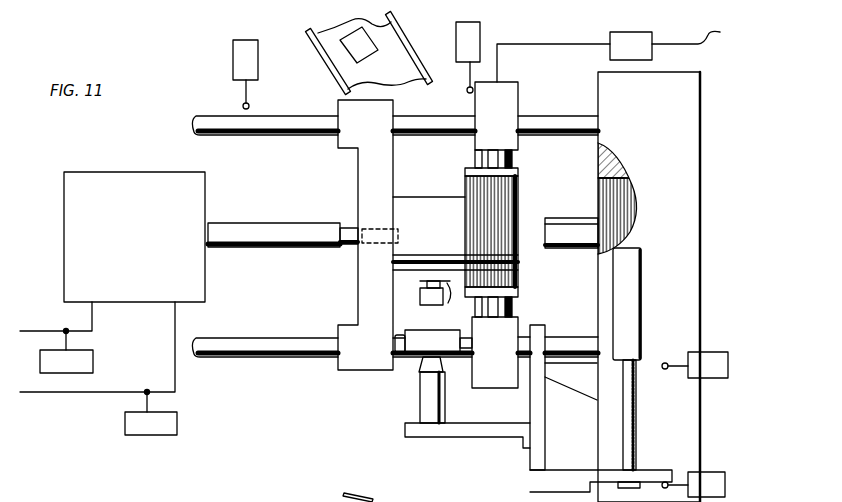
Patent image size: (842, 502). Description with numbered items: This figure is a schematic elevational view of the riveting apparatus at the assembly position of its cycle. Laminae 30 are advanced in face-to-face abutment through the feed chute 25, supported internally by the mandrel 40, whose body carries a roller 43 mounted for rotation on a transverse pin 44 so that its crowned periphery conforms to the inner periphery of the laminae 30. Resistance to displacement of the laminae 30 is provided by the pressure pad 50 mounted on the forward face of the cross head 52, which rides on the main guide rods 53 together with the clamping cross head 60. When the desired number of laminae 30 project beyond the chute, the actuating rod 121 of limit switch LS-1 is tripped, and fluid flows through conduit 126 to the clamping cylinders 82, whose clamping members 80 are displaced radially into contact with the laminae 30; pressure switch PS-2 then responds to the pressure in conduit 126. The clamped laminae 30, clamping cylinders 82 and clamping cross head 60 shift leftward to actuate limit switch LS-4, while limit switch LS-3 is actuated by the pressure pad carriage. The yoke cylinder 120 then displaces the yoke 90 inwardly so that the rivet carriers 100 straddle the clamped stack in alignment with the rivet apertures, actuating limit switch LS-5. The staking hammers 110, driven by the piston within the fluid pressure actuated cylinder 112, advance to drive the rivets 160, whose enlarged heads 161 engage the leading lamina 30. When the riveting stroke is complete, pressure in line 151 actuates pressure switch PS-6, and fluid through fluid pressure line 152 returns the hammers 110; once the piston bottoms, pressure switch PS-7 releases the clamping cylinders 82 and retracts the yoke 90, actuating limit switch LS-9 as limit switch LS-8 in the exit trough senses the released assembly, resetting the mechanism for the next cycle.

The fluid pressure actuated cylinder 112 is at (128, 230).
The line 151 is at (92, 322).
The fluid pressure line 152 is at (175, 353).
The pressure switch PS-6 is at (66, 351).
The pressure switch PS-7 is at (151, 413).
The main guide rods 53 is at (254, 128).
The staking hammers 110 is at (350, 226).
The cross head 52 is at (358, 284).
The limit switch LS-1 is at (420, 297).
The actuating rod 121 is at (438, 304).
The rivet carriers 100 is at (440, 350).
The yoke 90 is at (508, 442).
The enlarged heads 161 is at (397, 358).
The rivets 160 is at (462, 343).
The clamping member 80 is at (465, 172).
The clamping cylinders 82 is at (503, 95).
The clamping cross head 60 is at (522, 158).
The pressure pad 50 is at (430, 224).
The laminae 30 is at (500, 256).
The mandrel 40 is at (557, 218).
The anvil and rivet carrier yoke cylinder 120 is at (630, 293).
The transverse pin 44 is at (526, 340).
The roller 43 is at (545, 368).
The feed chute 25 is at (705, 76).
The pressure switch PS-2 is at (638, 34).
The fluid conduit 126 is at (701, 35).
The limit switch LS-3 is at (233, 55).
The limit switch LS-4 is at (480, 38).
The limit switch LS-8 is at (352, 40).
The limit switch LS-5 is at (757, 337).
The limit switch LS-9 is at (757, 455).